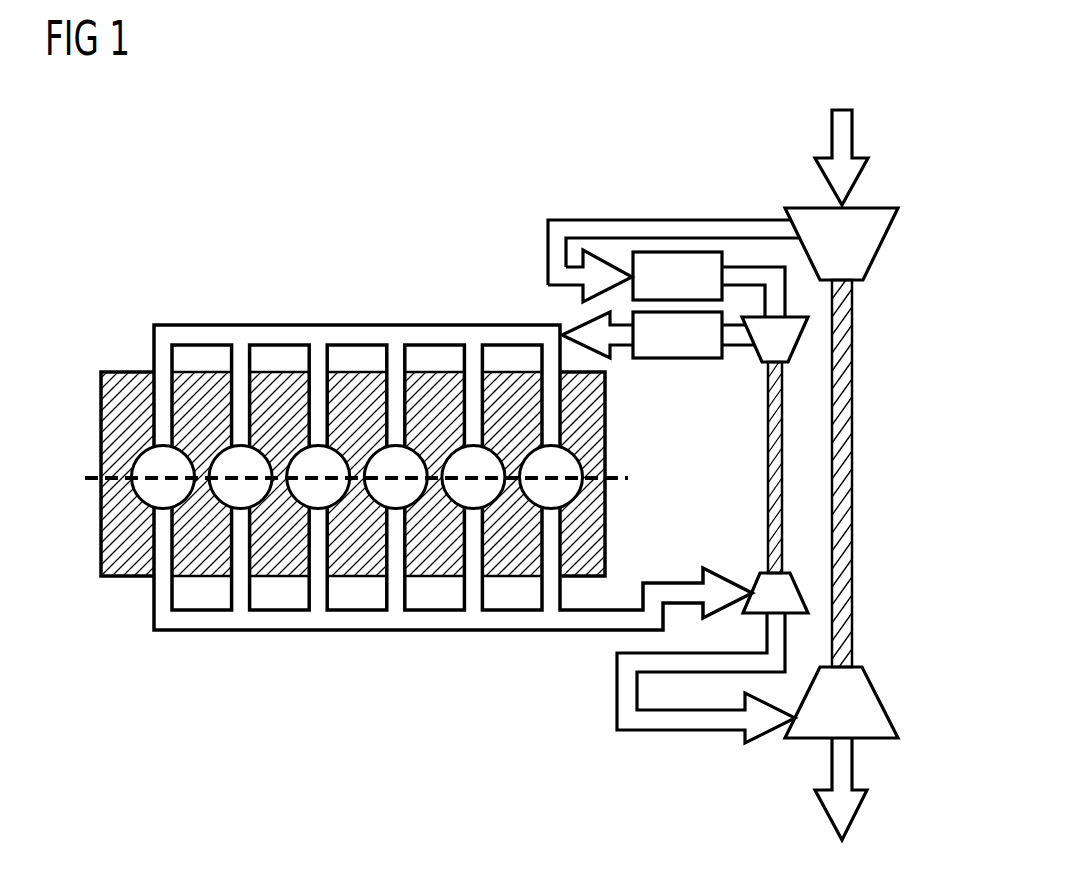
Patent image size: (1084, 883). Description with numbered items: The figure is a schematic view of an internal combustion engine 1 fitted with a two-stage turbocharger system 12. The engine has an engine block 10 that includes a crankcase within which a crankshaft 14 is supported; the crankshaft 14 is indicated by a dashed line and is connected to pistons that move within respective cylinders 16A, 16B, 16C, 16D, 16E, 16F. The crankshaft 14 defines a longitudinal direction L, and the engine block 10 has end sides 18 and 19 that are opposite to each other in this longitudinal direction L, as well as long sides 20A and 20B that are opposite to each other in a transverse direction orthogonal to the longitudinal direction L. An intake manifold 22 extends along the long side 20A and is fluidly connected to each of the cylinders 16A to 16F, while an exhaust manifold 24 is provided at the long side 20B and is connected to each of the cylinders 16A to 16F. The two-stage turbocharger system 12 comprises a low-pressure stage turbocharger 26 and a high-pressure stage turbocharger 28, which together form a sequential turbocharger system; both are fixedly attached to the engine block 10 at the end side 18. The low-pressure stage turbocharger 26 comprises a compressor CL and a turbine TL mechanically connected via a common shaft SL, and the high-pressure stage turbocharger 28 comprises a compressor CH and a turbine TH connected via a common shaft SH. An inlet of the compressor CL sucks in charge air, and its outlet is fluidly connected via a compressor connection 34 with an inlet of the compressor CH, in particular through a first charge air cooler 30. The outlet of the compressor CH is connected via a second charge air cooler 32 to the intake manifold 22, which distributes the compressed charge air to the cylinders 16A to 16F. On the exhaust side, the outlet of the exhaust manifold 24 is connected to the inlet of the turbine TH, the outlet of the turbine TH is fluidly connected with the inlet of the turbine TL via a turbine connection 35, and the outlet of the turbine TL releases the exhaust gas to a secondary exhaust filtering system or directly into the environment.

The internal combustion engine 1 is at (431, 137).
The engine block 10 is at (607, 505).
The two-stage turbocharger system 12 is at (688, 148).
The crankshaft 14 is at (620, 470).
The cylinder 16A is at (172, 490).
The cylinder 16B is at (230, 463).
The cylinder 16C is at (313, 488).
The cylinder 16D is at (378, 460).
The cylinder 16E is at (467, 490).
The cylinder 16F is at (540, 463).
The end side 18 is at (630, 540).
The end side 19 is at (83, 529).
The long side 20A is at (361, 354).
The long side 20B is at (355, 595).
The intake manifold 22 is at (277, 337).
The exhaust manifold 24 is at (208, 632).
The low-pressure stage turbocharger 26 is at (894, 354).
The high-pressure stage turbocharger 28 is at (719, 442).
The first charge air cooler 30 is at (680, 250).
The second charge air cooler 32 is at (672, 360).
The compressor connection 34 is at (548, 252).
The turbine connection 35 is at (668, 652).
The longitudinal direction L is at (92, 472).
The compressor CL is at (870, 240).
The compressor CH is at (800, 340).
The turbine TH is at (798, 590).
The turbine TL is at (868, 706).
The common shaft SH is at (768, 466).
The common shaft SL is at (845, 484).